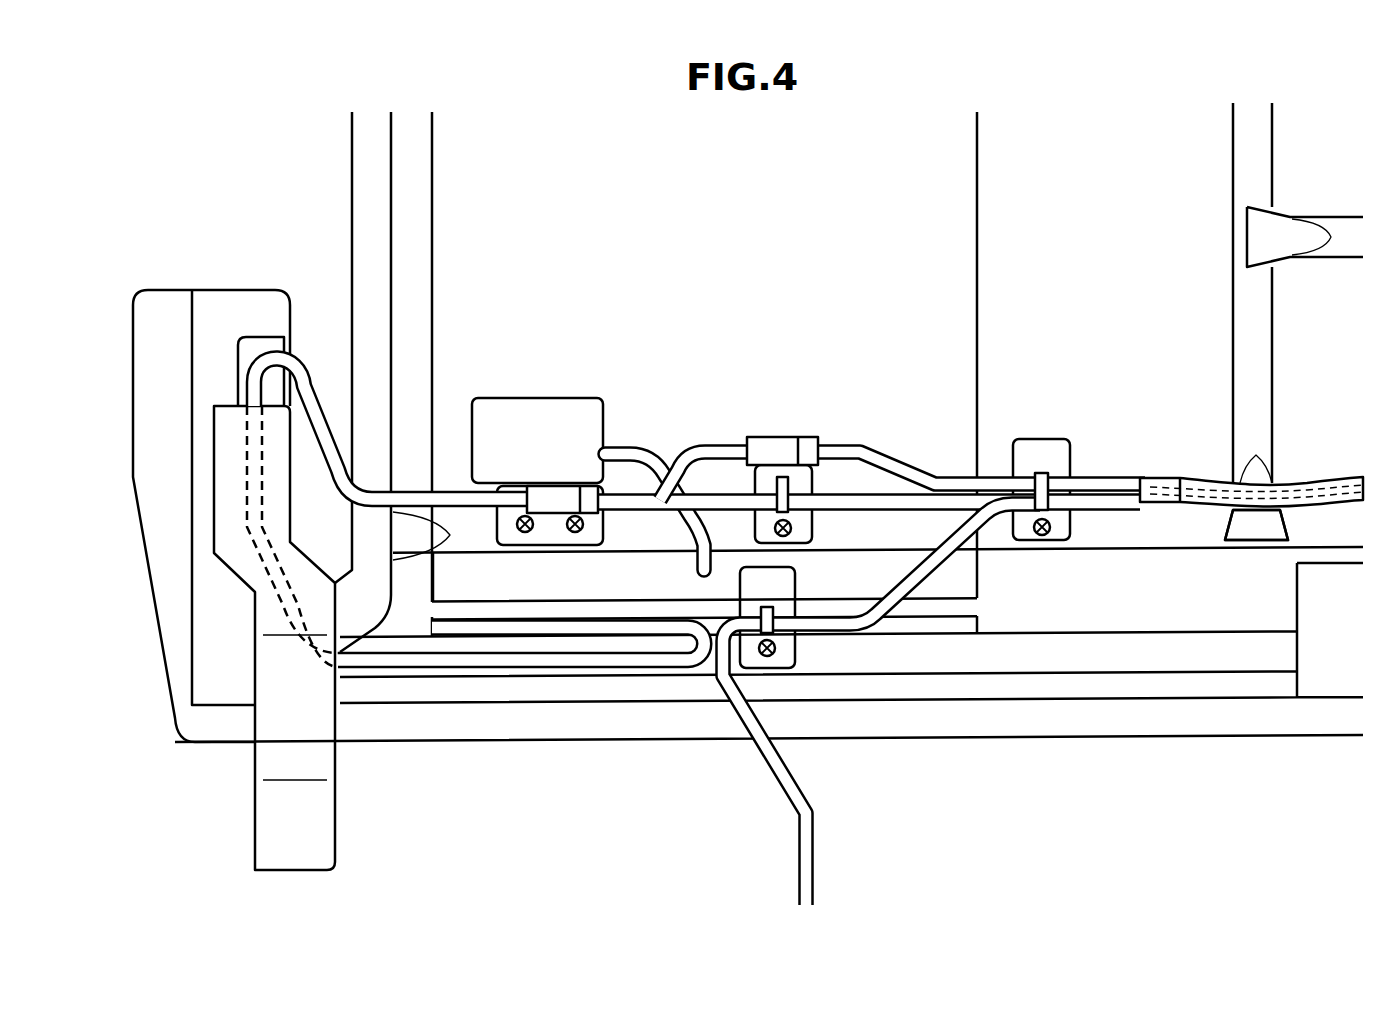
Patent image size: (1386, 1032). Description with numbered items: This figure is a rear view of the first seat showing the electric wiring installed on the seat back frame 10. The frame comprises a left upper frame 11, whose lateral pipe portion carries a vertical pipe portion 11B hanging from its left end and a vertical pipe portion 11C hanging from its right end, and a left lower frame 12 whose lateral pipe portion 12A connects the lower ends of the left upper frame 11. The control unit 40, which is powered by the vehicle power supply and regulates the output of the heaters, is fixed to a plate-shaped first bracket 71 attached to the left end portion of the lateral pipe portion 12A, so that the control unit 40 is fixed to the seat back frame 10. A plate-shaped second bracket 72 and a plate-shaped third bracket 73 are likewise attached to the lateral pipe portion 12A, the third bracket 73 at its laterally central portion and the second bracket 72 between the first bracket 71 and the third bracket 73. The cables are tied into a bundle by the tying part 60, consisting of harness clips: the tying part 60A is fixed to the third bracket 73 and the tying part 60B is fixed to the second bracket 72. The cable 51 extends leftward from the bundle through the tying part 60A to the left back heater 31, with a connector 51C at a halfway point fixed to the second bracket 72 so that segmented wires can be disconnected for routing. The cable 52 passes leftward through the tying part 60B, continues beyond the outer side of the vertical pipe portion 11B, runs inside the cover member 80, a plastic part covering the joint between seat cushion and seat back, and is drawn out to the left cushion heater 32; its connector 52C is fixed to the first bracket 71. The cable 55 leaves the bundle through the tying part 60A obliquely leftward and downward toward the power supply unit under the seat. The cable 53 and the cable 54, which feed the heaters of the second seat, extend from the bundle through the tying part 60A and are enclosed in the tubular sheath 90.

The seat back frame 10 is at (334, 157).
The left upper frame 11 is at (342, 188).
The vertical pipe portion 11B is at (360, 225).
The vertical pipe portion 11C is at (1262, 161).
The left lower frame 12 is at (1180, 562).
The lateral pipe portion 12A is at (1114, 548).
The left back heater 31 is at (590, 580).
The left cushion heater 32 is at (635, 625).
The control unit 40 is at (533, 400).
The cable 51 is at (880, 438).
The connector 51C is at (787, 440).
The cable 52 is at (463, 677).
The connector 52C is at (567, 503).
The cable 53 is at (1258, 528).
The cable 54 is at (1258, 528).
The cable 55 is at (830, 860).
The tying part 60 is at (936, 480).
The tying part 60A is at (1045, 474).
The tying part 60B is at (776, 478).
The first bracket 71 is at (548, 533).
The second bracket 72 is at (800, 530).
The third bracket 73 is at (1026, 440).
The cover member 80 is at (233, 281).
The sheath 90 is at (1193, 478).